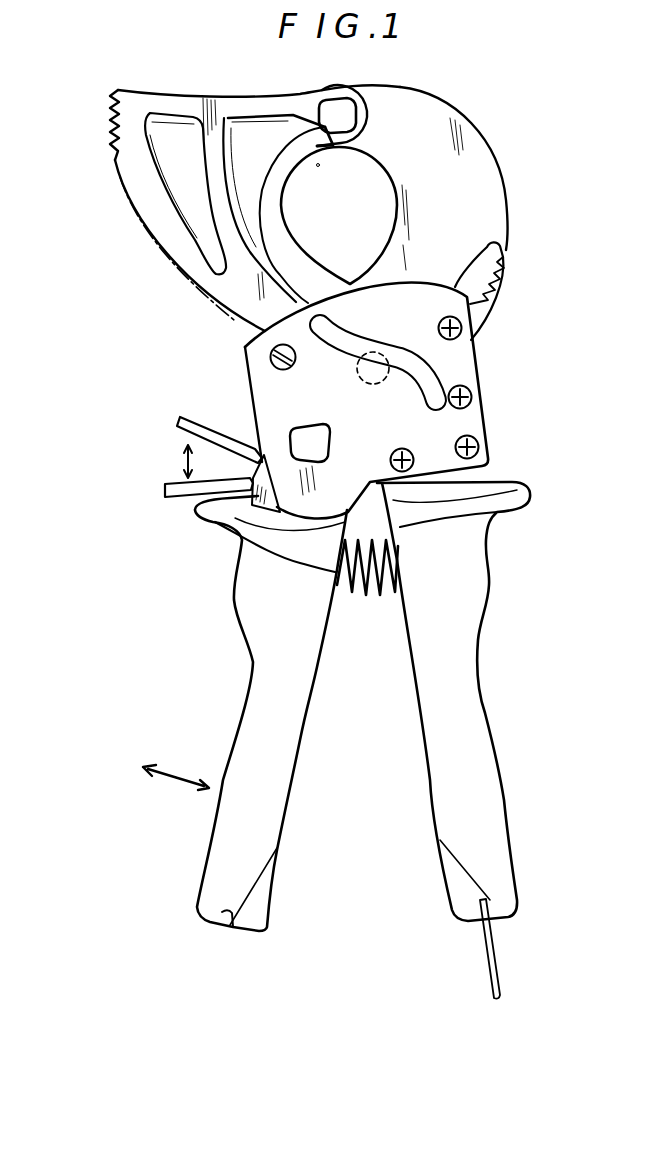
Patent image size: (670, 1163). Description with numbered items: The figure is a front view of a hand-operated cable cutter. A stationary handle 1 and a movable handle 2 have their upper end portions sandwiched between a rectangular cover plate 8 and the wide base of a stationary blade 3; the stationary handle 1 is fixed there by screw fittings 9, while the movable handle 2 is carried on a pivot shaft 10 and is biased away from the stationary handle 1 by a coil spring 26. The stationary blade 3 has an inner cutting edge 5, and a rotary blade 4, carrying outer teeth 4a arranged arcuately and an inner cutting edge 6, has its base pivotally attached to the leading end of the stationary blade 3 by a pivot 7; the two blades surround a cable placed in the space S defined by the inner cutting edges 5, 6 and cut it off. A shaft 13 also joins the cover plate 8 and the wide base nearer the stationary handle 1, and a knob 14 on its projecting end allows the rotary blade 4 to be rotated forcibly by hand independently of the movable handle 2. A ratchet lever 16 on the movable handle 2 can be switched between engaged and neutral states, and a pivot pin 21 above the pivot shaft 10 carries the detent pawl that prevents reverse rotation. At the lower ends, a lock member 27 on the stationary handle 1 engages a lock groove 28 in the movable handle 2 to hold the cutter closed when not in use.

The stationary handle 1 is at (463, 673).
The movable handle 2 is at (257, 698).
The stationary blade 3 is at (477, 190).
The rotary blade 4 is at (147, 188).
The outer teeth 4a is at (112, 135).
The inner cutting edge 5 is at (397, 223).
The inner cutting edge 6 is at (283, 224).
The pivot 7 is at (342, 112).
The cover plate 8 is at (460, 353).
The screw fittings 9 is at (472, 400).
The pivot shaft 10 is at (300, 440).
The shaft 13 is at (387, 363).
The knob 14 is at (413, 380).
The ratchet lever 16 is at (180, 490).
The pivot pin 21 is at (268, 355).
The coil spring 26 is at (352, 598).
The lock member 27 is at (499, 958).
The lock groove 28 is at (229, 914).
The space S is at (318, 165).